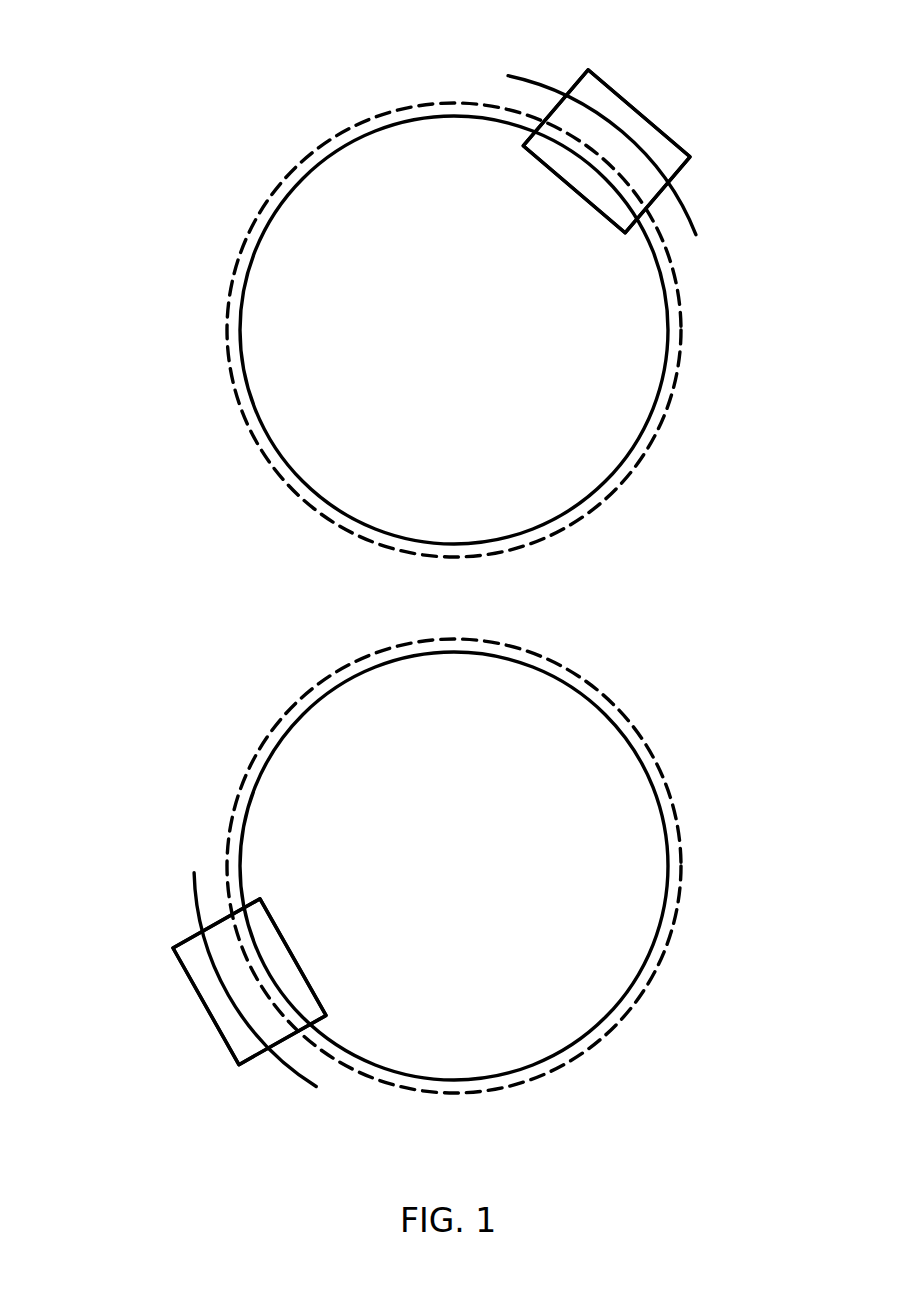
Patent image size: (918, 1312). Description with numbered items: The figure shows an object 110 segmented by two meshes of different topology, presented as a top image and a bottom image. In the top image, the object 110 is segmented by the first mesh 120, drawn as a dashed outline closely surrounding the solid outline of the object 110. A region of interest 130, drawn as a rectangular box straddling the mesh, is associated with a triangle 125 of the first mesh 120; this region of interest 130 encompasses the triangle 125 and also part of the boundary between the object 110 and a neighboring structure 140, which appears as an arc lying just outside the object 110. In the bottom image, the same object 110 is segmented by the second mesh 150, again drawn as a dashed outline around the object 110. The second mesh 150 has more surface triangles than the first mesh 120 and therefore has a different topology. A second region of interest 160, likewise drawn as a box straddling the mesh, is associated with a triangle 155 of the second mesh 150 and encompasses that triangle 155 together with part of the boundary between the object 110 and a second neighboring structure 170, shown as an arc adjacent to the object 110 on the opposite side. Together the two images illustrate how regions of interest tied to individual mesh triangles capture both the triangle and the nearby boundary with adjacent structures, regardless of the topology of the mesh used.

The object 110 is at (454, 598).
The first mesh 120 is at (298, 152).
The triangle 125 is at (601, 138).
The region of interest 130 is at (589, 70).
The neighboring structure 140 is at (693, 217).
The second mesh 150 is at (298, 688).
The triangle 155 is at (238, 982).
The second region of interest 160 is at (173, 948).
The second neighboring structure 170 is at (288, 1068).